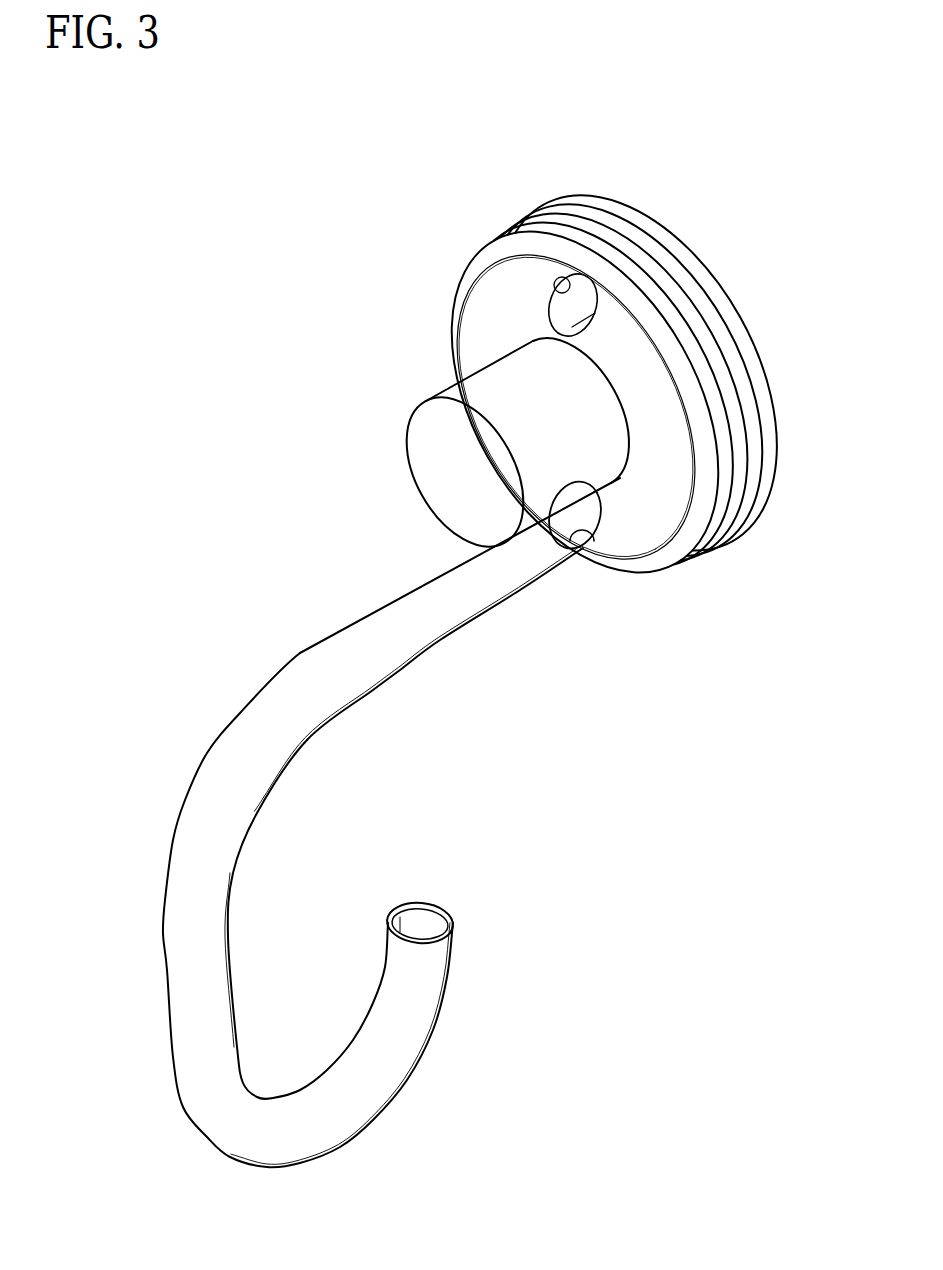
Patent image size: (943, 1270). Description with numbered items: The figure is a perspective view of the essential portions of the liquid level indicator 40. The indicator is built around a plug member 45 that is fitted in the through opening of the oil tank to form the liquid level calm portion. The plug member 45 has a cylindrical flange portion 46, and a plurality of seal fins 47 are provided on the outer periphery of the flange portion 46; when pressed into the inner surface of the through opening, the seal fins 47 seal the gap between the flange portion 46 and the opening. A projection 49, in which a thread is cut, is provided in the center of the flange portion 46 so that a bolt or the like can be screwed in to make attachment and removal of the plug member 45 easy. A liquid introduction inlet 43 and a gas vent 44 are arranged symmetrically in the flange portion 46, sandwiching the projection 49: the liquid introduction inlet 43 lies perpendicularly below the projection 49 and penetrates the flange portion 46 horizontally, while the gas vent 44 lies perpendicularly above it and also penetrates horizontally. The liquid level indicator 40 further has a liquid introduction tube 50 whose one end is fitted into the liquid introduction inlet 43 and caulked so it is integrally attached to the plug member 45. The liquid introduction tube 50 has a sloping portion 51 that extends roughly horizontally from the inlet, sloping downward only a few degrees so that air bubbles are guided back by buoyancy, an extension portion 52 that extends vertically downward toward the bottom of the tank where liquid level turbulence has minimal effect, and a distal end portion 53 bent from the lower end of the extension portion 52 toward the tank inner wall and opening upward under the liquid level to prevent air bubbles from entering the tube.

The liquid level indicator 40 is at (551, 350).
The liquid introduction inlet 43 is at (597, 557).
The gas vent 44 is at (552, 297).
The plug member 45 is at (730, 297).
The flange portion 46 is at (672, 505).
The seal fins 47 is at (667, 278).
The projection 49 is at (405, 460).
The liquid introduction tube 50 is at (341, 822).
The sloping portion 51 is at (357, 619).
The extension portion 52 is at (163, 965).
The distal end portion 53 is at (456, 913).